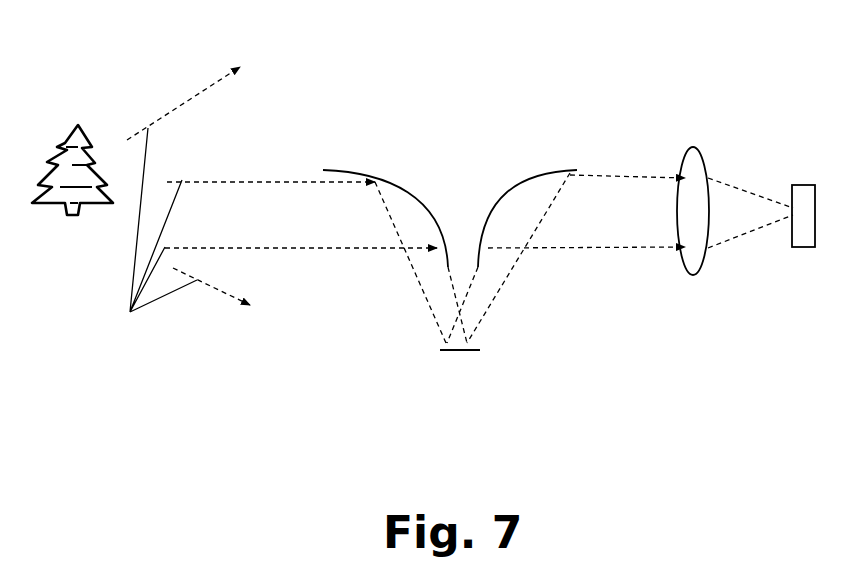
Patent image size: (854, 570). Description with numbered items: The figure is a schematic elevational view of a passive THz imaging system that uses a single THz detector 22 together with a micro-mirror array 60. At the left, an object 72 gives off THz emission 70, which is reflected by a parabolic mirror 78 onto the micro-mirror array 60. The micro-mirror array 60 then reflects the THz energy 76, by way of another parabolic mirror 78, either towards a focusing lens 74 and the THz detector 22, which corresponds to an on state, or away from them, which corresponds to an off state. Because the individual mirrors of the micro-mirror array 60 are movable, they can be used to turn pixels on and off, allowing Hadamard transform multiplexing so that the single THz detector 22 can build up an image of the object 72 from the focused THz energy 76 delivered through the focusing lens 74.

The THz detector 22 is at (797, 237).
The micro-mirror array 60 is at (470, 340).
The THz emission 70 is at (280, 205).
The object 72 is at (77, 214).
The focusing lens 74 is at (695, 145).
The THz energy 76 is at (622, 180).
The parabolic mirror 78 is at (538, 182).